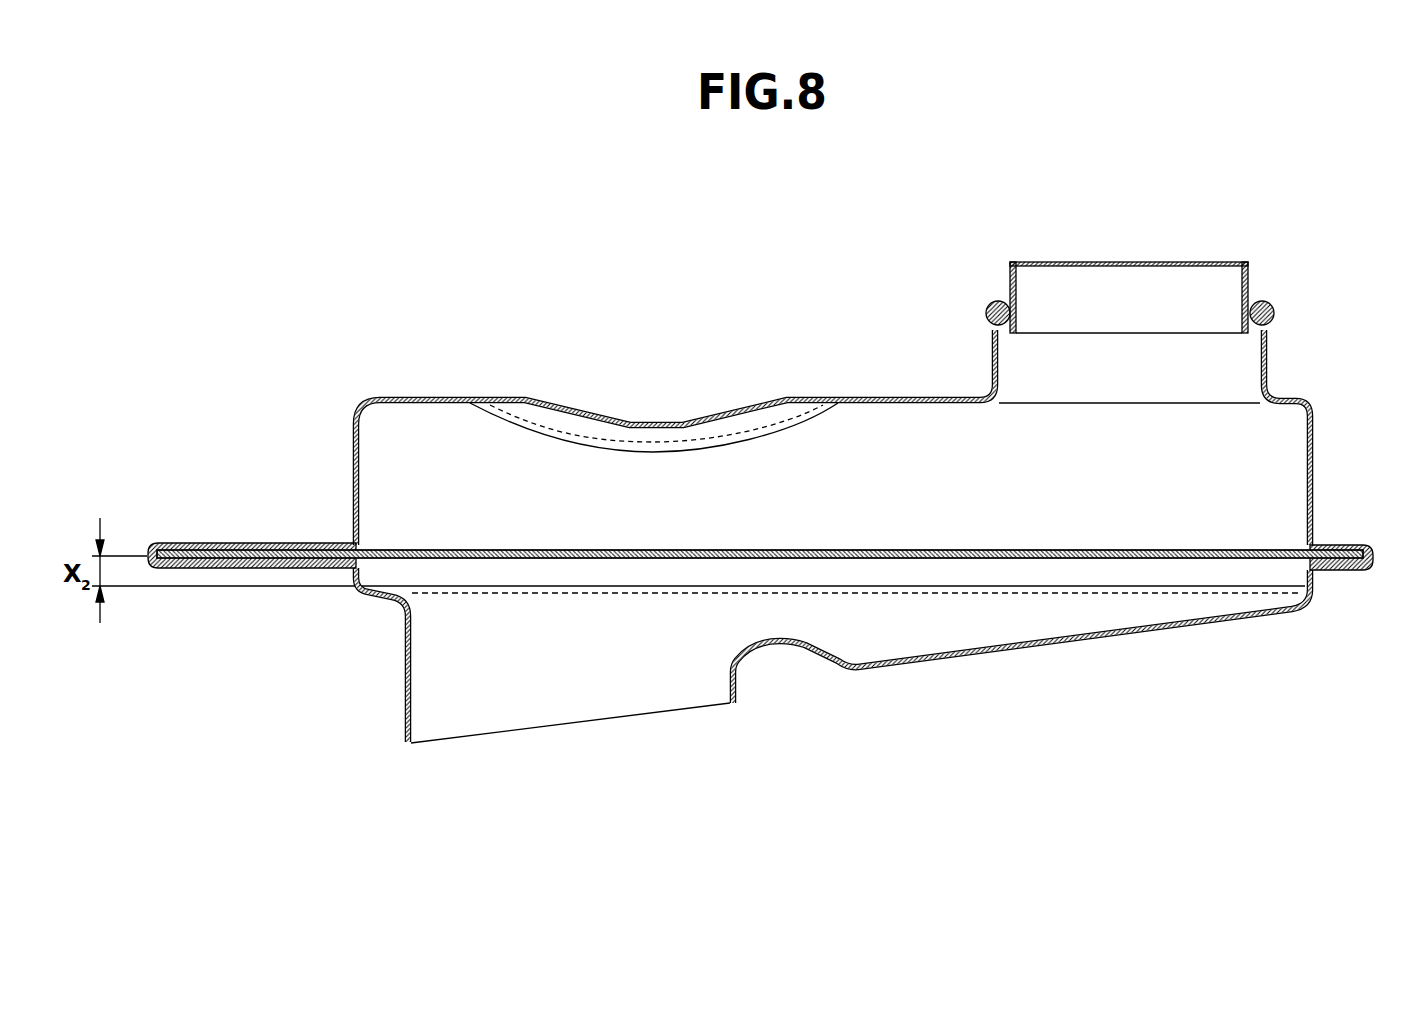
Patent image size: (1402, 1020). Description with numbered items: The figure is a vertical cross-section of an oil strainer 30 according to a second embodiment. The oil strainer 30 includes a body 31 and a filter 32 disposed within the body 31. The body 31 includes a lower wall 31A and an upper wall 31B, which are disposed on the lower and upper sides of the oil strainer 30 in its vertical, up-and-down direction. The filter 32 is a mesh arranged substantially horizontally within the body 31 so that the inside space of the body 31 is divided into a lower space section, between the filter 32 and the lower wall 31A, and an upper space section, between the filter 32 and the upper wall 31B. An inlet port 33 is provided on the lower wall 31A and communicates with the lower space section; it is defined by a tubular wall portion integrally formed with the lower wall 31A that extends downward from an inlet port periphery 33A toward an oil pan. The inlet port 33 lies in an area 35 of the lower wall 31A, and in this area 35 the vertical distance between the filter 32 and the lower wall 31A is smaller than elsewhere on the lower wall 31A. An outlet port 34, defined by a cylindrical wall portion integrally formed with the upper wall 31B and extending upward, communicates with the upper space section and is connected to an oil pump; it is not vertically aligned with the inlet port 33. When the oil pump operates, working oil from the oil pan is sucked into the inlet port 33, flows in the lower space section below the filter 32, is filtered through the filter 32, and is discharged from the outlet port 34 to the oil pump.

The oil strainer 30 is at (820, 318).
The body 31 is at (353, 474).
The lower wall 31A is at (1042, 646).
The upper wall 31B is at (903, 397).
The filter 32 is at (1143, 546).
The inlet port 33 is at (626, 663).
The inlet port periphery 33A is at (403, 600).
The outlet port 34 is at (1190, 297).
The area 35 is at (658, 600).